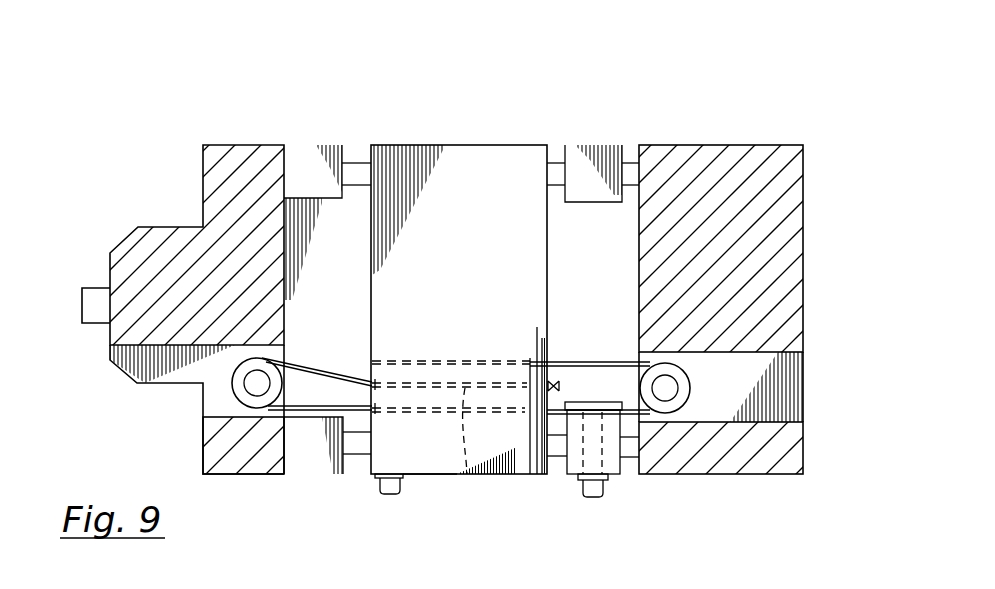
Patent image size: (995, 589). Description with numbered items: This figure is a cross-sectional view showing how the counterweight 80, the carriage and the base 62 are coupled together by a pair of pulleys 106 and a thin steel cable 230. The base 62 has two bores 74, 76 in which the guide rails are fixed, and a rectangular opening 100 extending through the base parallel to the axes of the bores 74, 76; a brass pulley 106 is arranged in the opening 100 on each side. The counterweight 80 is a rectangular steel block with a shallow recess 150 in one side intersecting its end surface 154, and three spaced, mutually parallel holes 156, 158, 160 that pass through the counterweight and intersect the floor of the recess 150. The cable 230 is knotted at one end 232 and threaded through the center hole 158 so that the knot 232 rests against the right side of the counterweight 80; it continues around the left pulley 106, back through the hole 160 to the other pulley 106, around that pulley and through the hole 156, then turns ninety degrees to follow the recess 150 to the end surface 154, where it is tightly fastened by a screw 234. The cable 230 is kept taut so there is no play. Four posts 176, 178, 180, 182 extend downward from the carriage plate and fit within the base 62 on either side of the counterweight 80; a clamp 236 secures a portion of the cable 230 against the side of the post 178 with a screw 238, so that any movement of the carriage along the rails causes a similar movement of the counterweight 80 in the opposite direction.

The base 62 is at (198, 180).
The bore 74 is at (627, 165).
The bore 76 is at (632, 445).
The counterweight 80 is at (445, 150).
The rectangular opening 100 is at (146, 385).
The brass pulley 106 is at (233, 393).
The shallow recess 150 is at (377, 437).
The end surface 154 is at (435, 480).
The hole 156 is at (430, 360).
The center hole 158 is at (467, 477).
The hole 160 is at (515, 410).
The post 176 is at (318, 456).
The post 178 is at (613, 463).
The post 180 is at (308, 150).
The post 182 is at (588, 172).
The cable 230 is at (333, 368).
The end 232 is at (557, 383).
The screw 234 is at (390, 496).
The clamp 236 is at (613, 402).
The screw 238 is at (590, 498).